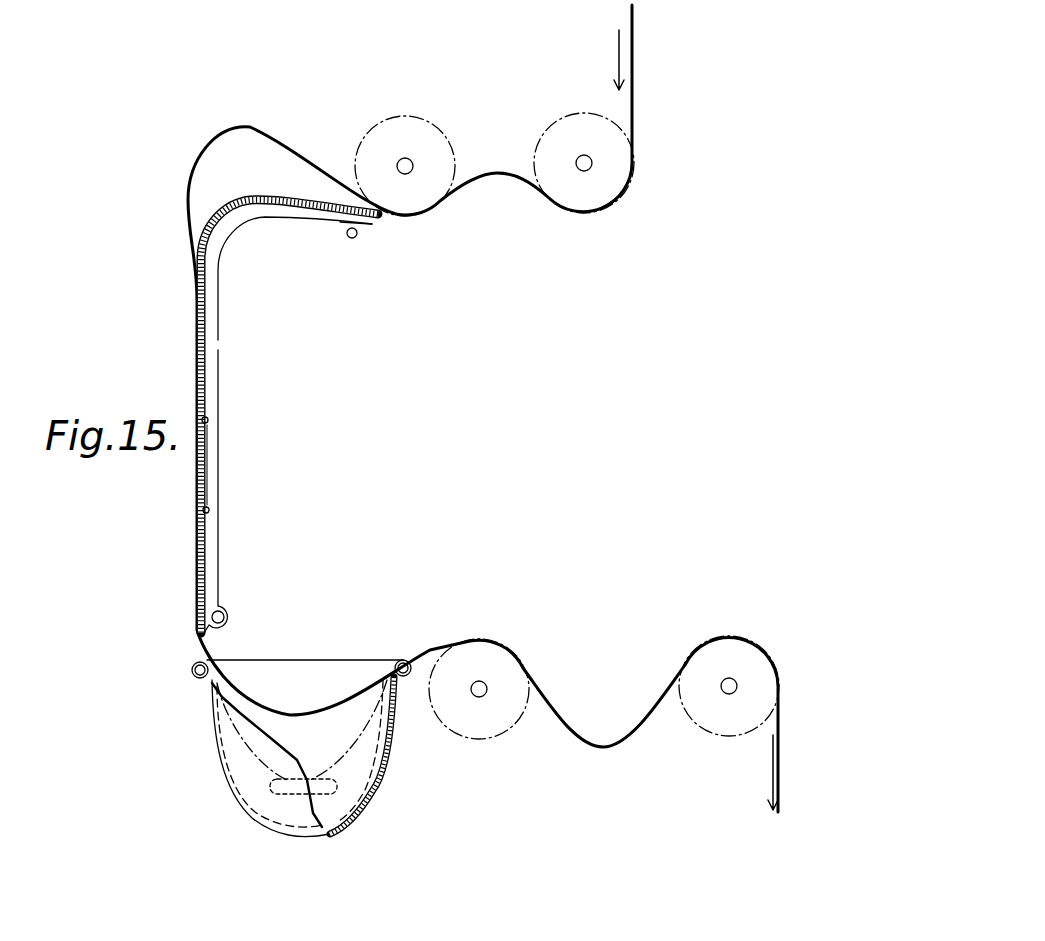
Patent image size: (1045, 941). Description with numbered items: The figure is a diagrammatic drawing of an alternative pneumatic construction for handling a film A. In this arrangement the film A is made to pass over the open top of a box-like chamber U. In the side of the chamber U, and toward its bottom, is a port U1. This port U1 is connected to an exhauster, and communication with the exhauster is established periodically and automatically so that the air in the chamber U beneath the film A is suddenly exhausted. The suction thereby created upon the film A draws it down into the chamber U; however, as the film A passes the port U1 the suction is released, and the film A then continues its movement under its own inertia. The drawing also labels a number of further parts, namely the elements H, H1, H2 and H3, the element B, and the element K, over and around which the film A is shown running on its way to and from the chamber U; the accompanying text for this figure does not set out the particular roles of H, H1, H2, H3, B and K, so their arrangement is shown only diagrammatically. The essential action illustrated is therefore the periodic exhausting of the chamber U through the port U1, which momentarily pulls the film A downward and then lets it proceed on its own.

The film A is at (633, 57).
The feed roller H is at (580, 135).
The feed roller H1 is at (388, 140).
The delivery roller H2 is at (487, 727).
The delivery roller H3 is at (735, 728).
The guide plate B is at (205, 467).
The guide lip K is at (373, 223).
The box-like chamber U is at (212, 713).
The port U1 is at (327, 785).